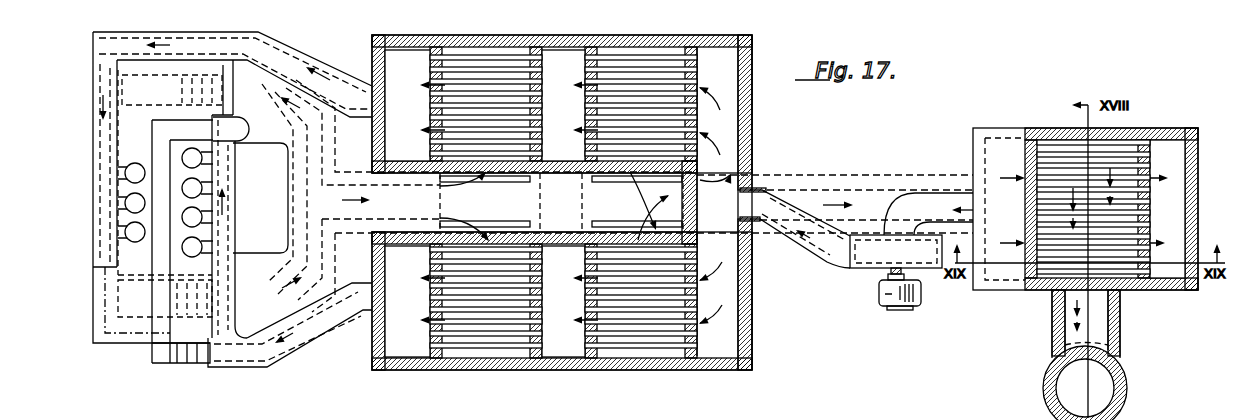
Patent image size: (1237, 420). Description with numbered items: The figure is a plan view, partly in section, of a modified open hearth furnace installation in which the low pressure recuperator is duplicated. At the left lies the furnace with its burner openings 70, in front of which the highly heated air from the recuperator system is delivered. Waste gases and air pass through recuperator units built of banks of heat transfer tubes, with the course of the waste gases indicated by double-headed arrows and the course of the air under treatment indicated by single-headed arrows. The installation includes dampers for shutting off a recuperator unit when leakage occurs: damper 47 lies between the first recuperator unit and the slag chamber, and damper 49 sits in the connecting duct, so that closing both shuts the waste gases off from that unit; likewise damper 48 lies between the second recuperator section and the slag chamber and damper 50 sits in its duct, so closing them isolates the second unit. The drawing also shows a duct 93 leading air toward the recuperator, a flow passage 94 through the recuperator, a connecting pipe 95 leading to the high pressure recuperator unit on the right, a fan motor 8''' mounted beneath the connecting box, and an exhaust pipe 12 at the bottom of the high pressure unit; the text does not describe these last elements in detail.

The burner openings 70 is at (202, 243).
The air inlet duct 93 is at (379, 202).
The damper 50 is at (478, 182).
The damper 49 is at (492, 212).
The damper 48 is at (632, 182).
The damper 47 is at (620, 220).
The heat exchanger flow passage 94 is at (587, 207).
The connecting pipe 95 is at (835, 221).
The fan motor 8''' is at (877, 302).
The exhaust pipe 12 is at (1128, 387).